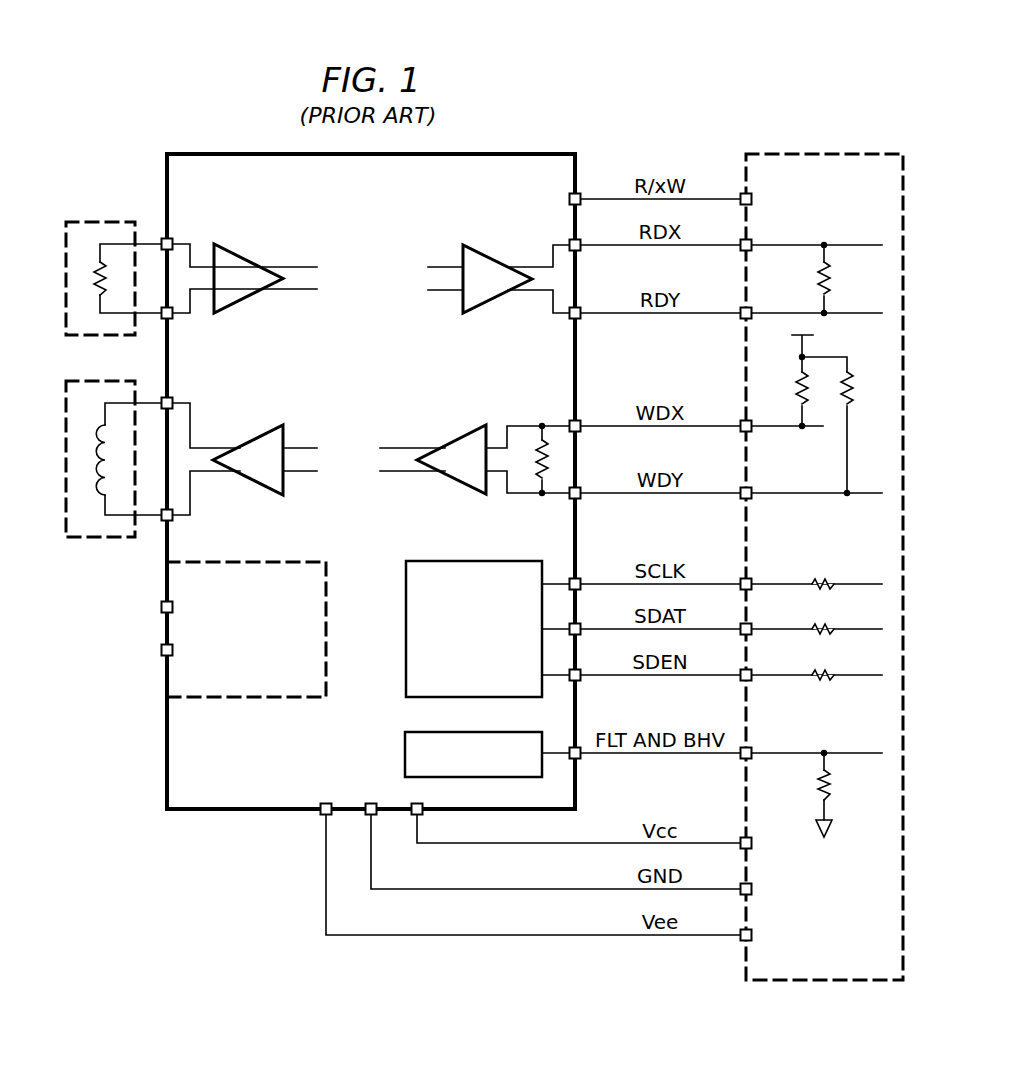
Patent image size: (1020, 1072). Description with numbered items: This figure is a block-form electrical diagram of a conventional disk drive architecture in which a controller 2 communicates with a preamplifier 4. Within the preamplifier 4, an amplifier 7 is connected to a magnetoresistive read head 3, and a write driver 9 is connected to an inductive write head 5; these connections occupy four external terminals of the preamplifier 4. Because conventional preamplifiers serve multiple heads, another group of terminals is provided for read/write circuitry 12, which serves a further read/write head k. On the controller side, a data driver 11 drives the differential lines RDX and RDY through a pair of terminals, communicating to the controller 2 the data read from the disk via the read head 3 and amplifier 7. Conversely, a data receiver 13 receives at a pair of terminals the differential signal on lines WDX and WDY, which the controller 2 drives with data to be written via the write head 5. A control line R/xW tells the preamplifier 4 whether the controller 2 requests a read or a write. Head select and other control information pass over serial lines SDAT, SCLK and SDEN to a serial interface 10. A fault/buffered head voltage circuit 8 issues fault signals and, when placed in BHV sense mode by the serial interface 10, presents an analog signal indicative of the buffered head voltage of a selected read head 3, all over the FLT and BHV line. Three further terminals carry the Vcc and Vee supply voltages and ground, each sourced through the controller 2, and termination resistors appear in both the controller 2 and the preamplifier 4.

The controller 2 is at (836, 154).
The magnetoresistive read head 3 is at (95, 221).
The preamplifier 4 is at (233, 154).
The inductive write head 5 is at (88, 538).
The amplifier 7 is at (240, 302).
The fault/buffered head voltage (BHV) circuit 8 is at (404, 757).
The write driver 9 is at (258, 430).
The serial interface 10 is at (461, 676).
The data driver 11 is at (488, 302).
The read/write circuitry 12 is at (235, 698).
The data receiver 13 is at (464, 430).